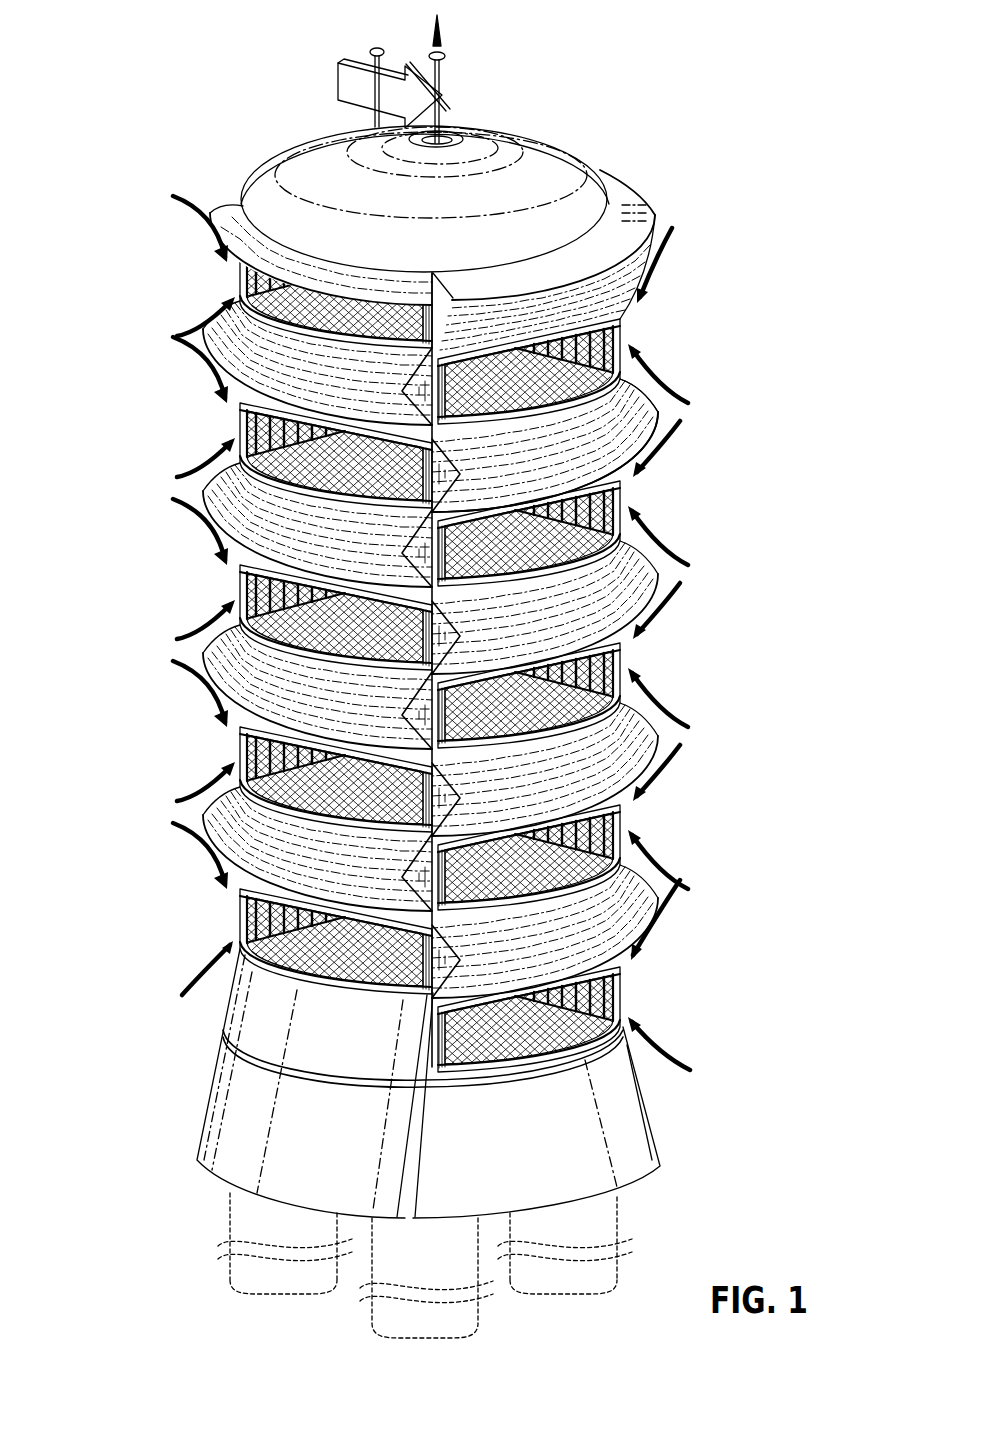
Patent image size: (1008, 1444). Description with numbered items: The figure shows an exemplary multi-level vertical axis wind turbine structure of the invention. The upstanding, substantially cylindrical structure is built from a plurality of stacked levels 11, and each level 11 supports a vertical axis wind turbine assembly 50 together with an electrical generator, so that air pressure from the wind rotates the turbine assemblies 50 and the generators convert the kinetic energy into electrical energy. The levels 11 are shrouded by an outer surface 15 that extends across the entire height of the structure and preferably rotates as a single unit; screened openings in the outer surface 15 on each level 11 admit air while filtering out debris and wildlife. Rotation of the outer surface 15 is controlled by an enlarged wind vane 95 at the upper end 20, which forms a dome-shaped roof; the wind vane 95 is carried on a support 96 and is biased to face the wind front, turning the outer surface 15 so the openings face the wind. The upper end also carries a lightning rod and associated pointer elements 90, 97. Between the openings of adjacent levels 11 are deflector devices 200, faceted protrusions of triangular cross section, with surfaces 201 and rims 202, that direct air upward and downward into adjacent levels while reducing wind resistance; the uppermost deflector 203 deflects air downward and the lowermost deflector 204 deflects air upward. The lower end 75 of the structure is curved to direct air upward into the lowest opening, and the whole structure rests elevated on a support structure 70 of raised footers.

The level 11 is at (625, 820).
The outer surface 15 is at (240, 923).
The upper end 20 is at (538, 155).
The vertical axis wind turbine assembly 50 is at (184, 879).
The support structure 70 is at (383, 1317).
The lower end 75 is at (630, 1112).
The mast 90 is at (444, 66).
The wind vane 95 is at (418, 76).
The support 96 is at (370, 54).
The vane pointer 97 is at (452, 104).
The deflector device 200 is at (652, 417).
The flare upper surface 201 is at (647, 384).
The flare rim 202 is at (667, 431).
The uppermost deflector 203 is at (227, 205).
The lowermost deflector 204 is at (237, 998).